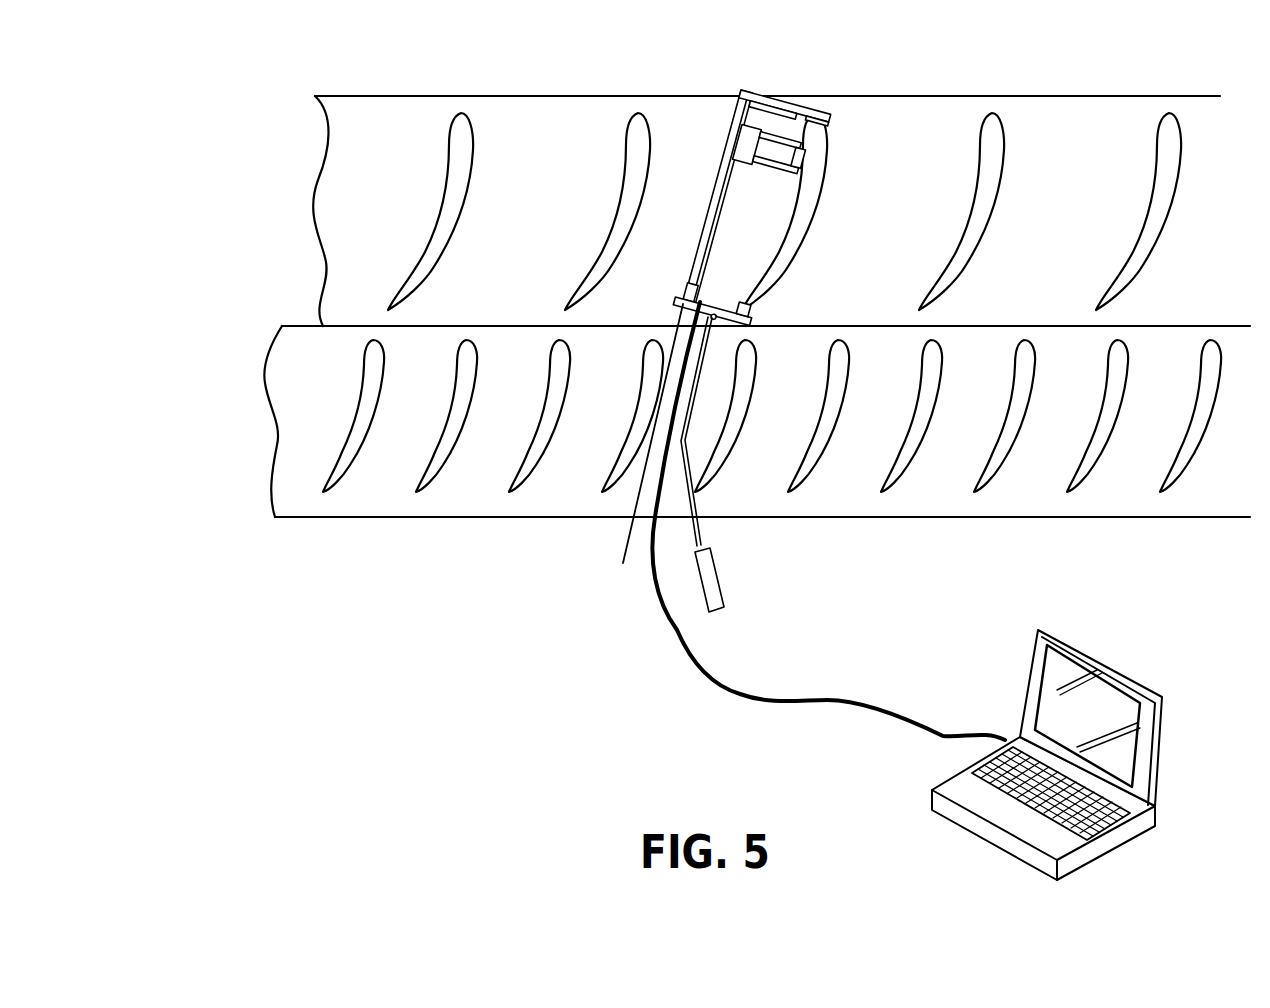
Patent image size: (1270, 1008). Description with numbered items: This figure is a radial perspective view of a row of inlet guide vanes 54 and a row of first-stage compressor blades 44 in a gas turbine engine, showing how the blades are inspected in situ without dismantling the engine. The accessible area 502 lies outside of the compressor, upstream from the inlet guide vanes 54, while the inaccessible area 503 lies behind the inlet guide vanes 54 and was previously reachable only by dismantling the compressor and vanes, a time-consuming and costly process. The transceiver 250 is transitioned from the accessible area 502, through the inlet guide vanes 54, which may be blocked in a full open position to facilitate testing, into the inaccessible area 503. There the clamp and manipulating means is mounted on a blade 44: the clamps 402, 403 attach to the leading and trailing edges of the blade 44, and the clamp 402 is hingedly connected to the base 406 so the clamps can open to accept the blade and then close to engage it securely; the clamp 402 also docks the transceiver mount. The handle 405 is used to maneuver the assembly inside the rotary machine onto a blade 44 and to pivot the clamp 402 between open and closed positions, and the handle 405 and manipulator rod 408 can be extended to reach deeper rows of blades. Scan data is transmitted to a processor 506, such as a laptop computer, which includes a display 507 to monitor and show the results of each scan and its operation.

The compressor blades 44 is at (266, 200).
The inlet guide vanes 54 is at (268, 423).
The inaccessible area 503 is at (537, 283).
The accessible area 502 is at (455, 583).
The base 406 is at (732, 122).
The clamp 403 is at (784, 100).
The transceiver 250 is at (793, 157).
The clamp 402 is at (743, 311).
The manipulator rod 408 is at (627, 544).
The handle 405 is at (713, 547).
The display 507 is at (1057, 702).
The processor 506 is at (1075, 768).